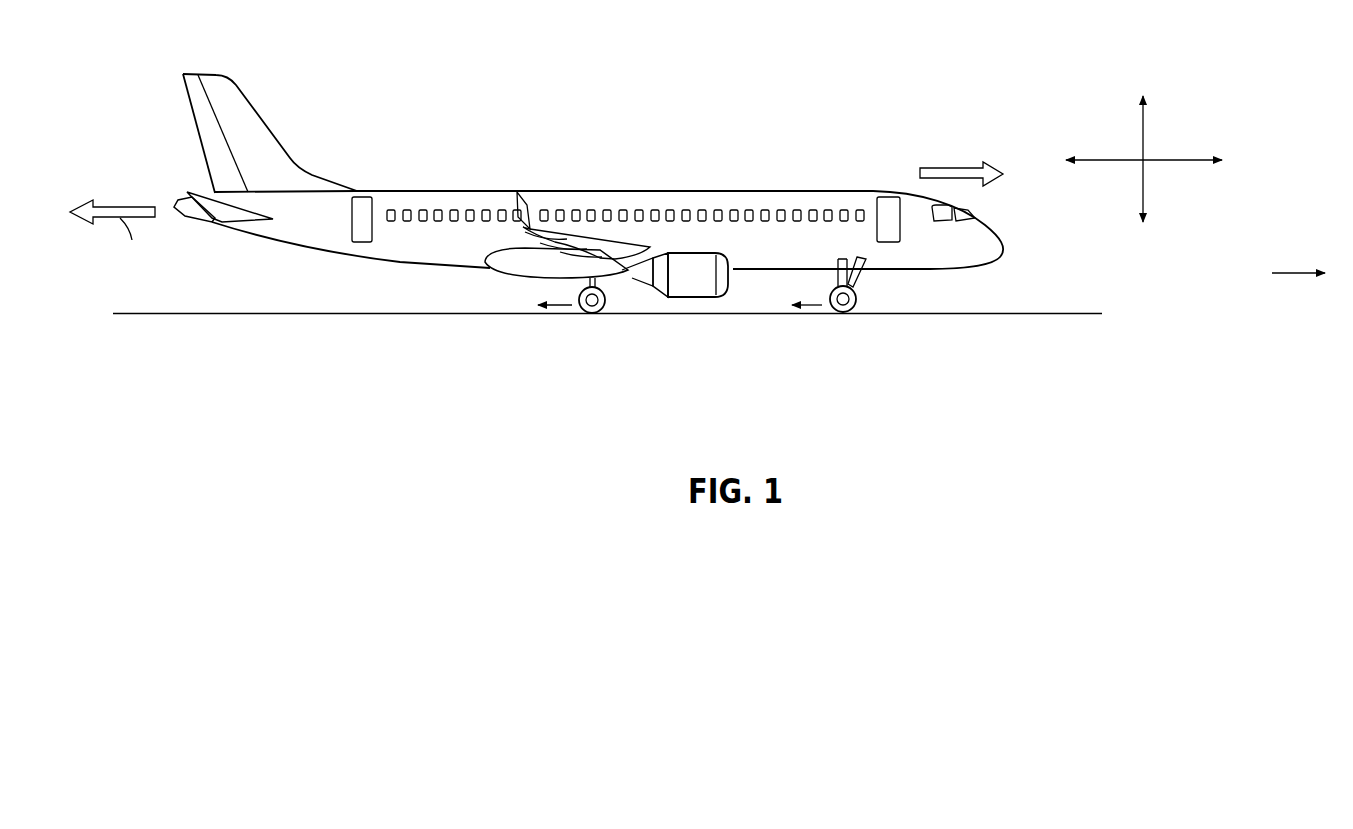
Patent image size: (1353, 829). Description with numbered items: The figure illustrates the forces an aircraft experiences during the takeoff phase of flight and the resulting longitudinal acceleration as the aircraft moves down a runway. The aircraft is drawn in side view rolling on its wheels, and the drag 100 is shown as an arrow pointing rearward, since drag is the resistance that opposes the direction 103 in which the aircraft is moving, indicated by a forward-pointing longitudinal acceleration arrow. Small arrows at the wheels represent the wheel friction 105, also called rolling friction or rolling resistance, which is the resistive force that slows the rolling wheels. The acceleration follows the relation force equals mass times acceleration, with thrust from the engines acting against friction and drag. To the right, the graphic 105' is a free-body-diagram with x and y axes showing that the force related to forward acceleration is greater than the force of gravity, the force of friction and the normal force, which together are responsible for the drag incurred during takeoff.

The drag 100 is at (137, 207).
The direction 103 is at (978, 108).
The wheel friction 105 is at (739, 353).
The free-body-diagram 105' is at (1191, 189).